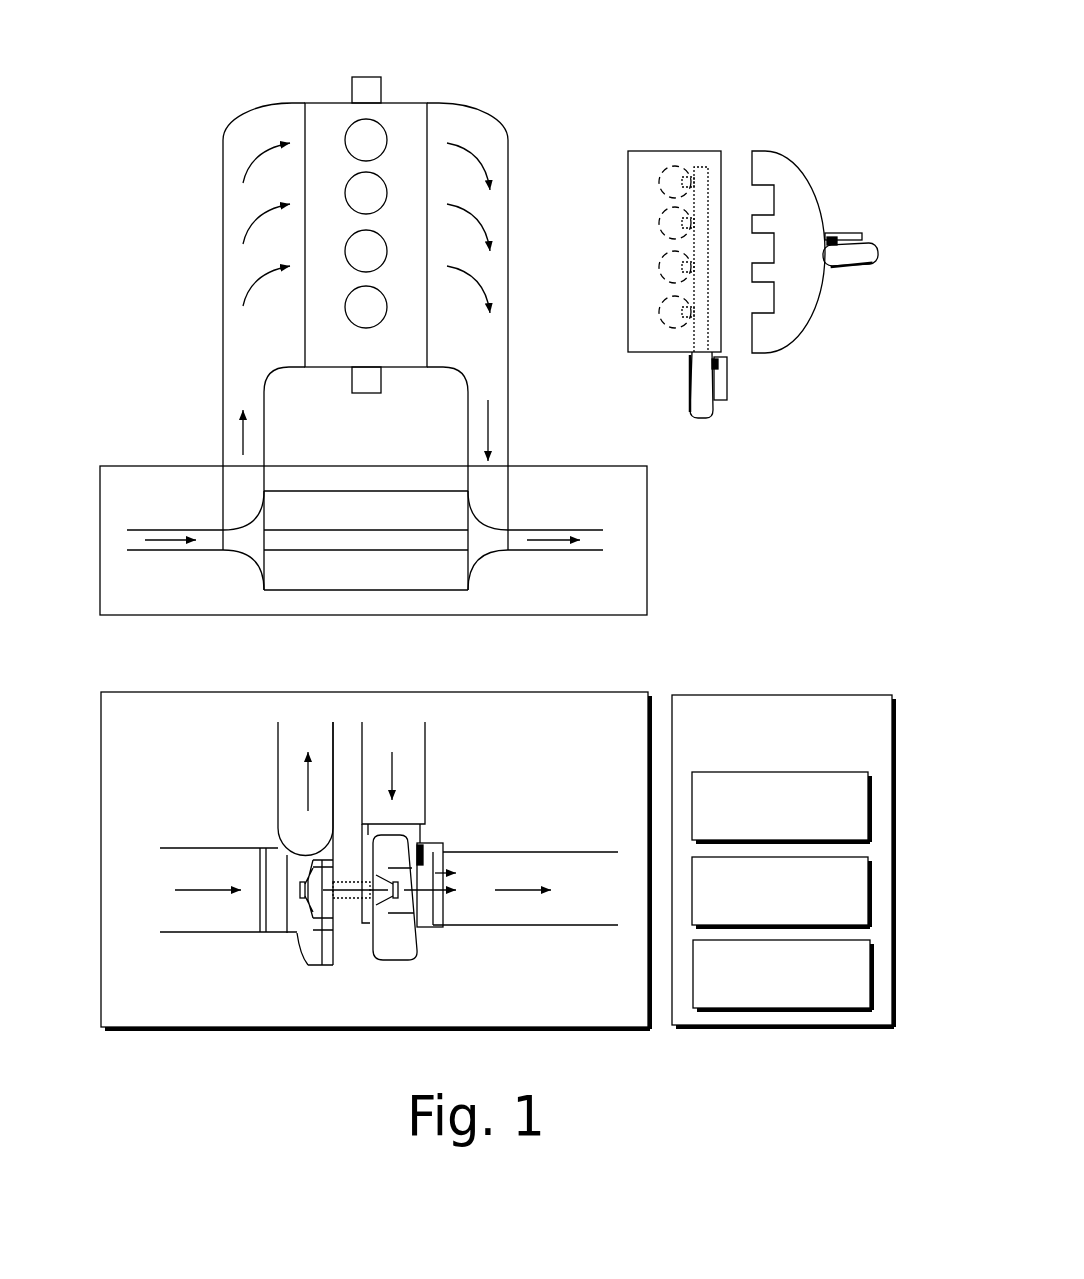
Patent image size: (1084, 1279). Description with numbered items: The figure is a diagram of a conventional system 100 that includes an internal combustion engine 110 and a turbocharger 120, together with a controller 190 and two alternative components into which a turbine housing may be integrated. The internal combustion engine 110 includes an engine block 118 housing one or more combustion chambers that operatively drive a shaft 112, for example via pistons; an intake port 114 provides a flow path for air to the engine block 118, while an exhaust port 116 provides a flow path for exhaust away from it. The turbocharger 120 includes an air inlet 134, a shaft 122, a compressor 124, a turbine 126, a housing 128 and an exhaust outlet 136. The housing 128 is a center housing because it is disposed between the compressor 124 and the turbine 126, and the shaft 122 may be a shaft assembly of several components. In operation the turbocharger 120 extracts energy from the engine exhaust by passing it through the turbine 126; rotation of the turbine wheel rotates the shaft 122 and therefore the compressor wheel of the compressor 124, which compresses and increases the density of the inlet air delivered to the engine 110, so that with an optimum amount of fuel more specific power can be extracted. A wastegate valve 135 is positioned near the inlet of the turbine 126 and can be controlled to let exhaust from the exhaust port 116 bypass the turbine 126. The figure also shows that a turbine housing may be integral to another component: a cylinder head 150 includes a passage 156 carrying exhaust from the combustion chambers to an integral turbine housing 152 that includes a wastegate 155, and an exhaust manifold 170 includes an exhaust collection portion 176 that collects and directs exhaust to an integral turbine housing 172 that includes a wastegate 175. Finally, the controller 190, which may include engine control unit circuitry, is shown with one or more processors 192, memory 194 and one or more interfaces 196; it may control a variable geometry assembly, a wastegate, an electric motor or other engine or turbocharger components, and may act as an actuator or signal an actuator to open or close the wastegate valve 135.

The system 100 is at (504, 40).
The internal combustion engine 110 is at (335, 102).
The shaft 112 is at (367, 77).
The intake port 114 is at (240, 118).
The exhaust port 116 is at (495, 120).
The engine block 118 is at (351, 362).
The turbocharger 120 is at (557, 466).
The shaft 122 is at (365, 552).
The compressor 124 is at (248, 560).
The turbine 126 is at (487, 560).
The housing 128 is at (352, 518).
The air inlet 134 is at (192, 530).
The wastegate valve 135 is at (424, 843).
The exhaust outlet 136 is at (562, 530).
The cylinder head 150 is at (655, 130).
The integral turbine housing 152 is at (688, 380).
The wastegate 155 is at (724, 365).
The passage 156 is at (702, 167).
The exhaust manifold 170 is at (795, 141).
The integral turbine housing 172 is at (847, 267).
The wastegate 175 is at (827, 233).
The exhaust collection portion 176 is at (792, 330).
The controller 190 is at (762, 759).
The processors 192 is at (764, 827).
The memory 194 is at (764, 912).
The interfaces 196 is at (765, 995).